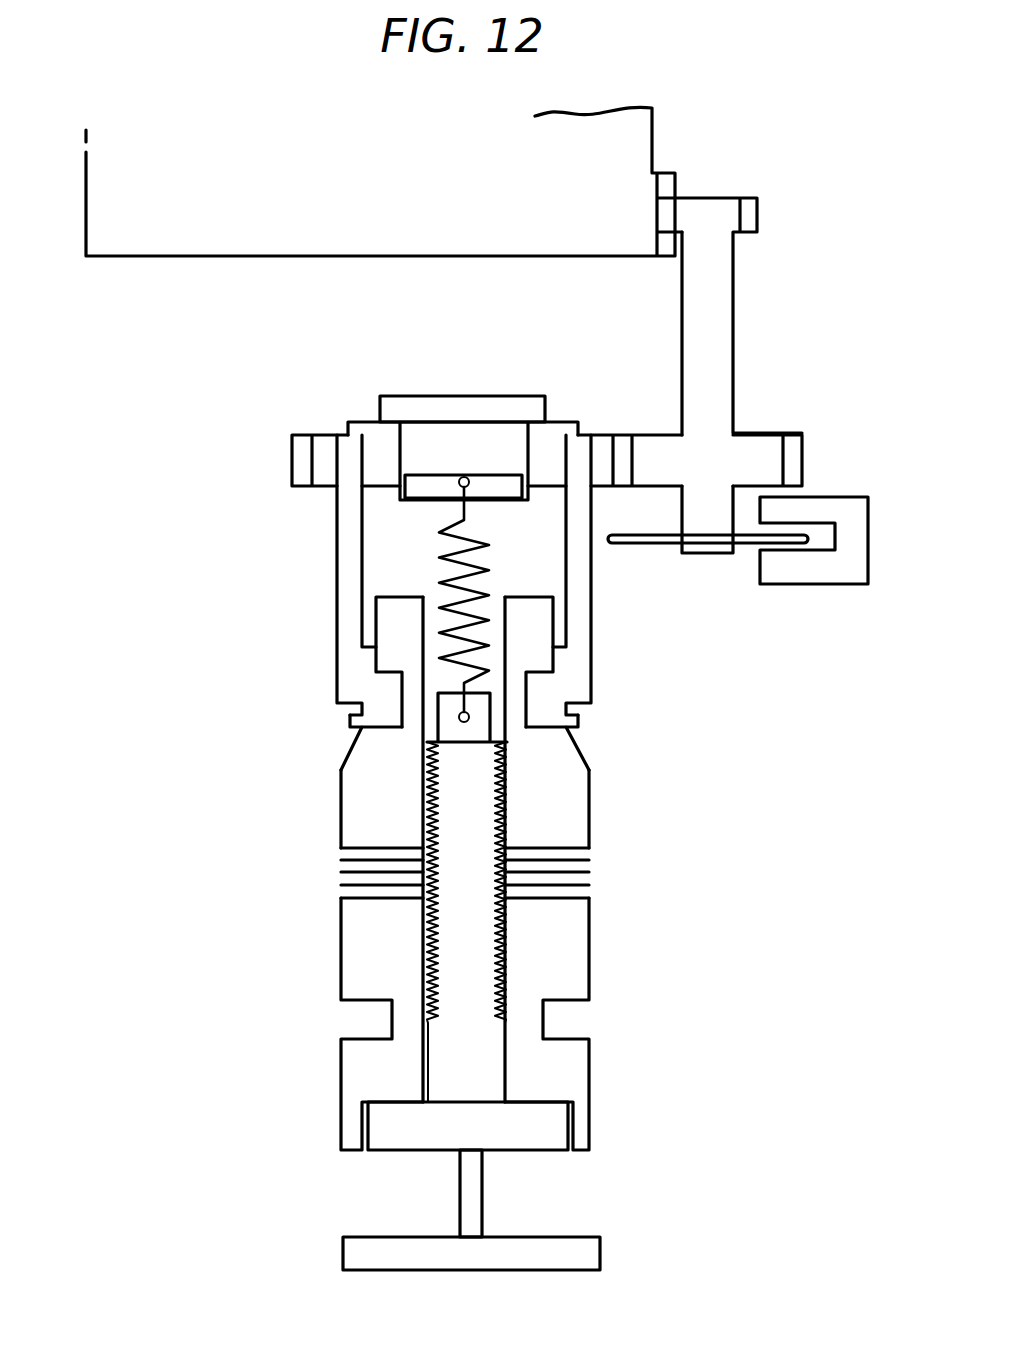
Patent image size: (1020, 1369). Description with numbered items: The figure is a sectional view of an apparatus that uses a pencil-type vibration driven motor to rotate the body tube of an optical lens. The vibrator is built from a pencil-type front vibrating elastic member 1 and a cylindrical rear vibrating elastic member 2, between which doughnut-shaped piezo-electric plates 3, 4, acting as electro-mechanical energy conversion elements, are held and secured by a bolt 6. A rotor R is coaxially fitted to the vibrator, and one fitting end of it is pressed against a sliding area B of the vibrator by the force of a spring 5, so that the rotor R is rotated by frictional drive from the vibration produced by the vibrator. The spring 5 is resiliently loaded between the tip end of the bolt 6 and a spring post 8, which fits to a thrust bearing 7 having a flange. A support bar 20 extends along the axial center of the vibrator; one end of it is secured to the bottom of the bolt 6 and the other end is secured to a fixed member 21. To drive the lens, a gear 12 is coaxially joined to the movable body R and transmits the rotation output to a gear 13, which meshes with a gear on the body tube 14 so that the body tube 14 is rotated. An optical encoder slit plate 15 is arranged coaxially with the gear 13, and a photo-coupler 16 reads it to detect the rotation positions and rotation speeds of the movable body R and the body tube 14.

The body tube 14 is at (163, 258).
The gear 13 is at (757, 440).
The gear 12 is at (320, 488).
The thrust bearing 7 is at (558, 428).
The spring post 8 is at (527, 410).
The spring 5 is at (443, 553).
The rotor R is at (591, 606).
The sliding area B is at (592, 757).
The front vibrating elastic member 1 is at (578, 806).
The piezo-electric plate 3 is at (585, 848).
The piezo-electric plate 4 is at (585, 878).
The rear vibrating elastic member 2 is at (583, 974).
The bolt 6 is at (543, 1143).
The support bar 20 is at (460, 1180).
The fixed member 21 is at (578, 1244).
The optical encoder slit plate 15 is at (752, 544).
The photo-coupler 16 is at (848, 582).